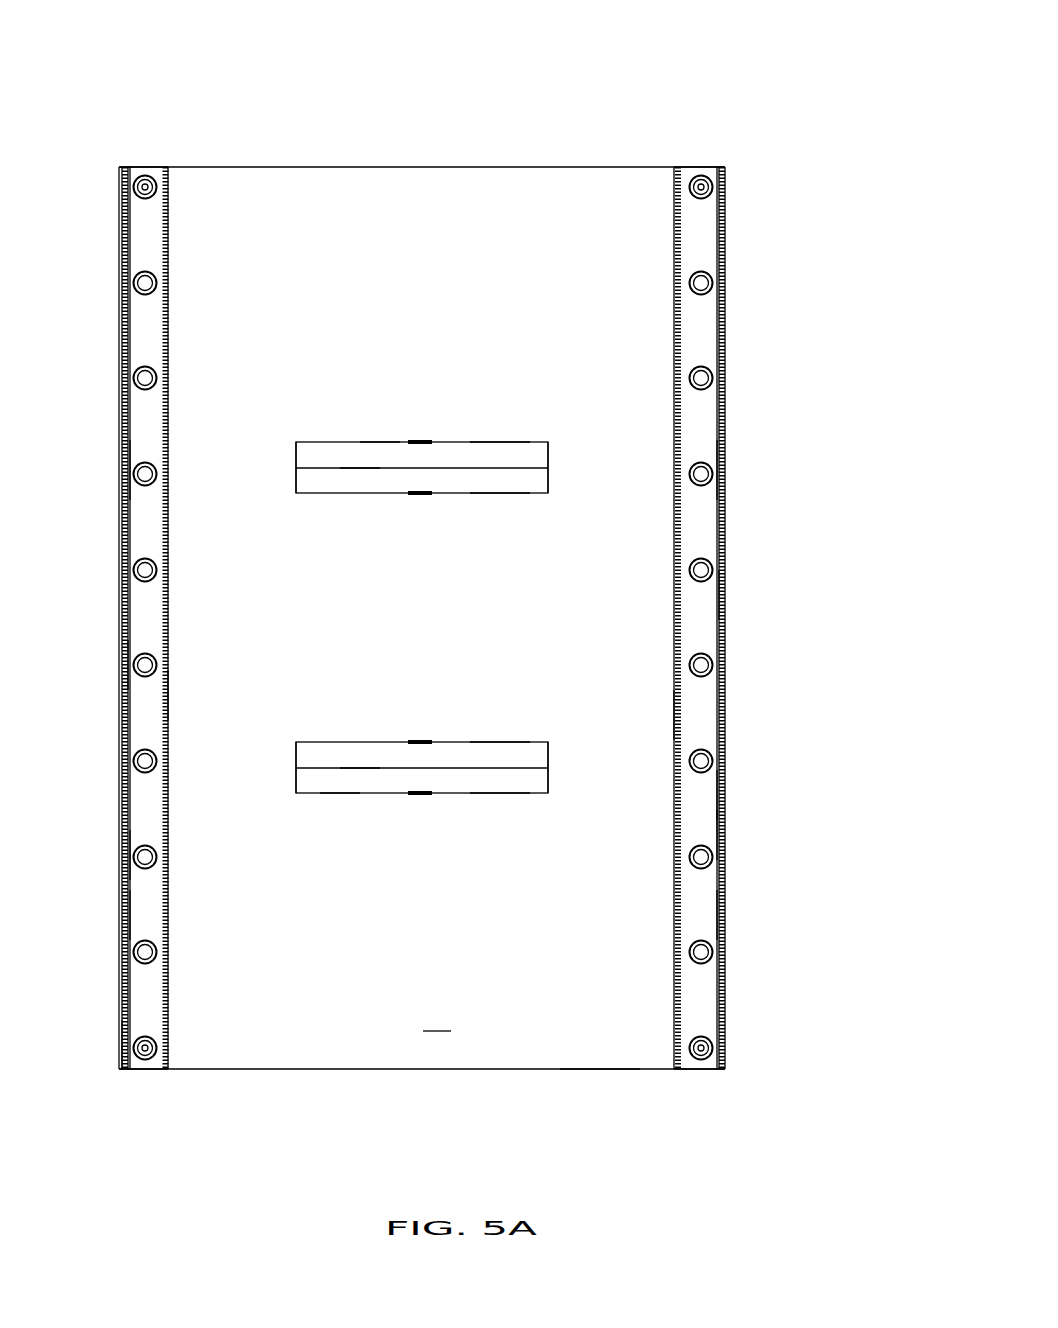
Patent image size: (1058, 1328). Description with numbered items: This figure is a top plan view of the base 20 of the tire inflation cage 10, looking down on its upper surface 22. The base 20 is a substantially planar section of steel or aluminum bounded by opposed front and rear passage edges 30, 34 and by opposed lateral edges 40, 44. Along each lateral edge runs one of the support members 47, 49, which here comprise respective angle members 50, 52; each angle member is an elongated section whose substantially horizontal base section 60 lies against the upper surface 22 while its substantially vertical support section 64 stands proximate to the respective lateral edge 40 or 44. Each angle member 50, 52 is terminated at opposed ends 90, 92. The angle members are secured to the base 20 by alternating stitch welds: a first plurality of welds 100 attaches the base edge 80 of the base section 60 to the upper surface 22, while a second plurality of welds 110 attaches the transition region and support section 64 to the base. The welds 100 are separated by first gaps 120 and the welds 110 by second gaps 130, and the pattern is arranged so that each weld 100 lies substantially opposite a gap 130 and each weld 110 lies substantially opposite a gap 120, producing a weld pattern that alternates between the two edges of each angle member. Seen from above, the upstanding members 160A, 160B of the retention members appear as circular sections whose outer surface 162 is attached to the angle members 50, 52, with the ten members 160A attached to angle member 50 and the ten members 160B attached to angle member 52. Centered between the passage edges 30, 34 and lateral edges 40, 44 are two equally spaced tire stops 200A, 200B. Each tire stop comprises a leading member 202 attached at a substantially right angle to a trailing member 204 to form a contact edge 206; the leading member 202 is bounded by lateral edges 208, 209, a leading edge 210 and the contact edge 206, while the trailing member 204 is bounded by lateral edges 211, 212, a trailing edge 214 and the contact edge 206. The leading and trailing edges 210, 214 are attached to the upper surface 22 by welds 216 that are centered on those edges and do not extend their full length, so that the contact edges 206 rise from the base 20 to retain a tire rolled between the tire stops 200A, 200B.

The tire inflation cage 10 is at (658, 78).
The base 20 is at (594, 1071).
The upper surface 22 is at (437, 1020).
The front passage edge 30 is at (287, 1069).
The rear passage edge 34 is at (325, 167).
The lateral edge 40 is at (125, 668).
The lateral edge 44 is at (718, 600).
The support member 47 is at (130, 470).
The support member 49 is at (717, 472).
The angle member 50 is at (132, 860).
The angle member 52 is at (712, 800).
The base section 60 is at (150, 912).
The support section 64 is at (122, 1042).
The base edge 80 is at (168, 693).
The end 90 is at (165, 1069).
The end 92 is at (143, 172).
The first plurality of welds 100 is at (168, 235).
The second plurality of welds 110 is at (119, 184).
The first gap 120 is at (168, 332).
The second gap 130 is at (125, 241).
The upstanding member 160A is at (150, 172).
The upstanding member 160B is at (698, 186).
The outer surface 162 is at (152, 182).
The tire stop 200A is at (395, 793).
The tire stop 200B is at (400, 490).
The leading member 202 is at (500, 455).
The trailing member 204 is at (497, 484).
The contact edge 206 is at (355, 462).
The lateral edge 208 is at (548, 447).
The lateral edge 209 is at (296, 447).
The leading edge 210 is at (383, 442).
The lateral edge 211 is at (548, 493).
The lateral edge 212 is at (296, 492).
The trailing edge 214 is at (355, 488).
The welds 216 is at (420, 442).